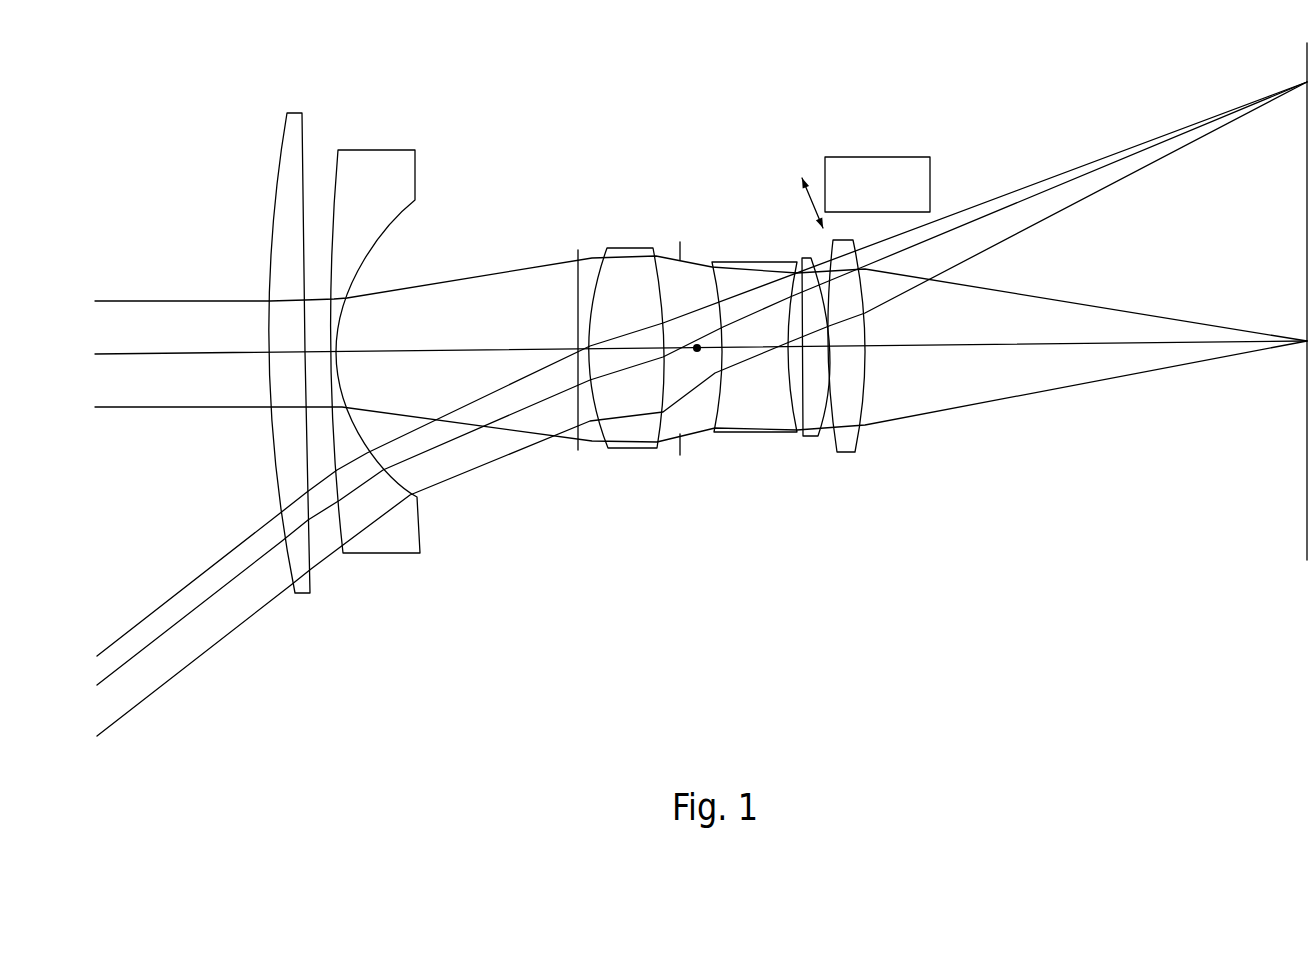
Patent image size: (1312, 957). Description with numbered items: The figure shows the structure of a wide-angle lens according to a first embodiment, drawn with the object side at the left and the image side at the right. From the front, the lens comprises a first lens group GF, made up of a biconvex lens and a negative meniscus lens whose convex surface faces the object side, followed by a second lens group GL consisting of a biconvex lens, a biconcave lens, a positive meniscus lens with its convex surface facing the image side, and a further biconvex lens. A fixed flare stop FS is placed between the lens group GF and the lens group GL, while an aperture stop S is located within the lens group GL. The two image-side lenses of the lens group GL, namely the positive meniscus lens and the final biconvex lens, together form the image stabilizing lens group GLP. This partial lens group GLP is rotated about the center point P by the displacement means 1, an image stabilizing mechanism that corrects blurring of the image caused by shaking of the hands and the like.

The first lens group GF is at (351, 314).
The second lens group GL is at (727, 248).
The image stabilizing lens group GLP is at (835, 274).
The displacement means 1 is at (930, 170).
The fixed flare stop FS is at (580, 447).
The aperture stop S is at (682, 452).
The center point P is at (691, 361).